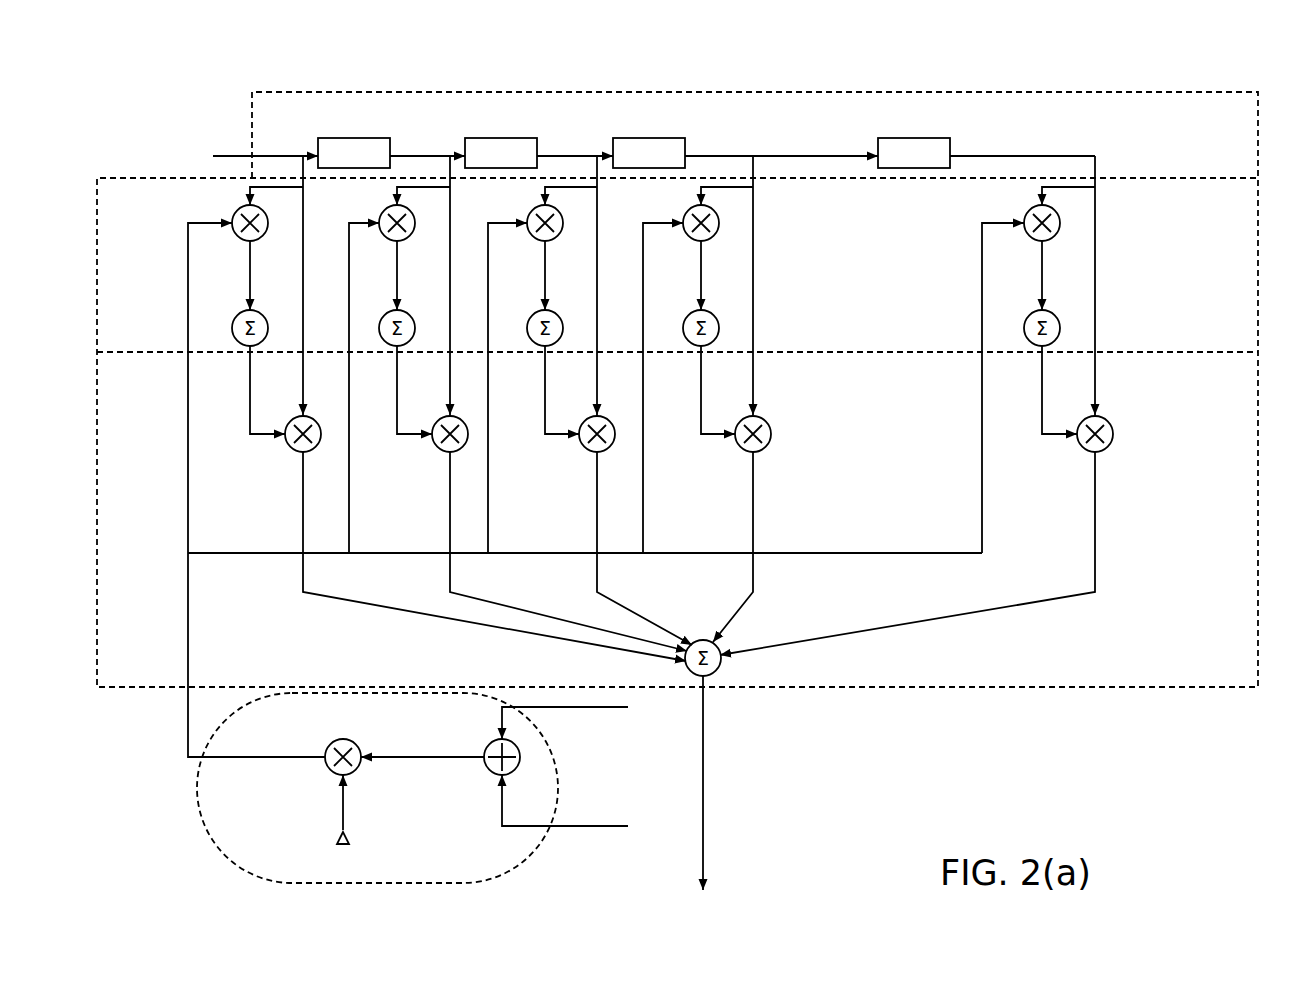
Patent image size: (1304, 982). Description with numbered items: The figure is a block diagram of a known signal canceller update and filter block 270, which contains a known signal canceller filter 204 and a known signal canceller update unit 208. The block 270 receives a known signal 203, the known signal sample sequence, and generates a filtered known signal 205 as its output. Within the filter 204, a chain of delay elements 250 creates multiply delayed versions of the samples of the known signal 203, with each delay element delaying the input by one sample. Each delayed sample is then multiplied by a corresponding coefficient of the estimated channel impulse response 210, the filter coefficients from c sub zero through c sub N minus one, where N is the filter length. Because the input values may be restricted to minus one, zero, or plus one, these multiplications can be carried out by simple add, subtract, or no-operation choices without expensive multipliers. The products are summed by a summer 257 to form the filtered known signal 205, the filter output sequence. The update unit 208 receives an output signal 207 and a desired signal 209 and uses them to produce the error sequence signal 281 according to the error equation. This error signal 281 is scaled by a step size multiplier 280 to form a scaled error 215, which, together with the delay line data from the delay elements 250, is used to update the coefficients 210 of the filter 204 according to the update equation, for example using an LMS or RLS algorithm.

The known signal canceller update and filter block 270 is at (1194, 50).
The known signal canceller filter 204 is at (1088, 92).
The known signal 203 is at (270, 155).
The delay elements 250 is at (333, 138).
The estimated channel impulse response 210 is at (297, 452).
The summer 257 is at (716, 647).
The filtered known signal 205 is at (704, 795).
The scaled error 215 is at (186, 737).
The known signal canceller update unit 208 is at (199, 822).
The step size multiplier 280 is at (340, 739).
The error sequence signal 281 is at (452, 756).
The output signal 207 is at (616, 710).
The desired signal 209 is at (596, 829).